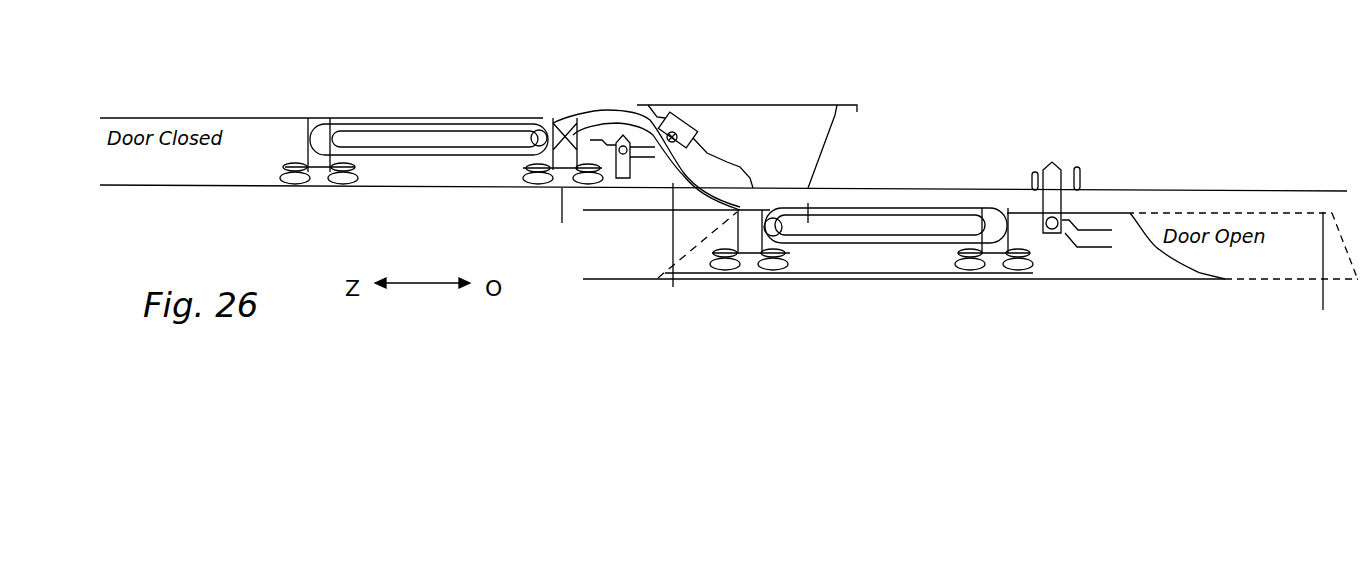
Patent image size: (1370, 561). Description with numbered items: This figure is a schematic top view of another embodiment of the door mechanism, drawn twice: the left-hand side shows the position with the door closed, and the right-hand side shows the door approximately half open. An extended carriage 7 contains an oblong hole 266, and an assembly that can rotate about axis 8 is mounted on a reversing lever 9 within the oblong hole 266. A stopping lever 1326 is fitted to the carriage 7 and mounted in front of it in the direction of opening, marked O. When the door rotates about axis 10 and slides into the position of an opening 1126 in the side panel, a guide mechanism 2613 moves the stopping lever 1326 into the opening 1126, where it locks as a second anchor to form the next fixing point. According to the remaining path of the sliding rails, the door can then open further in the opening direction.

The extended carriage 7 is at (318, 185).
The axis 8 is at (540, 130).
The reversing lever 9 is at (593, 117).
The axis 10 is at (683, 120).
The oblong hole 266 is at (435, 148).
The opening 1126 is at (1035, 174).
The stopping lever 1326 is at (620, 178).
The guide mechanism 2613 is at (1095, 247).